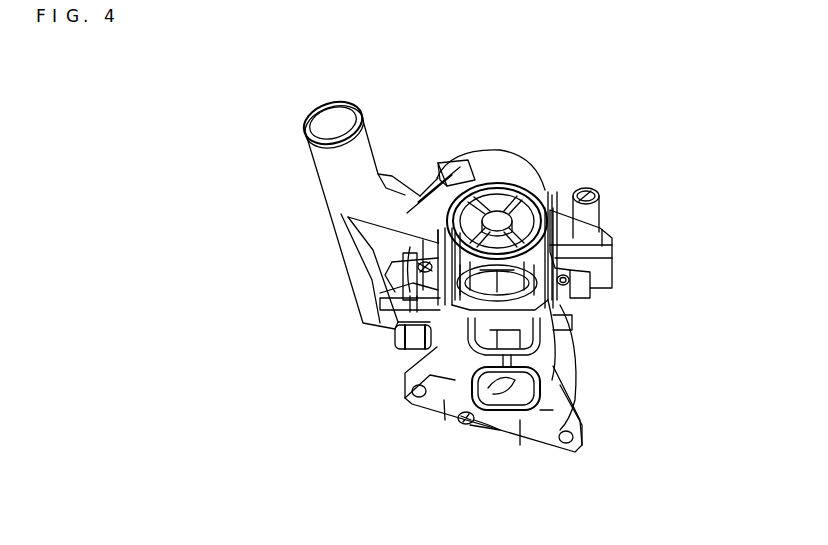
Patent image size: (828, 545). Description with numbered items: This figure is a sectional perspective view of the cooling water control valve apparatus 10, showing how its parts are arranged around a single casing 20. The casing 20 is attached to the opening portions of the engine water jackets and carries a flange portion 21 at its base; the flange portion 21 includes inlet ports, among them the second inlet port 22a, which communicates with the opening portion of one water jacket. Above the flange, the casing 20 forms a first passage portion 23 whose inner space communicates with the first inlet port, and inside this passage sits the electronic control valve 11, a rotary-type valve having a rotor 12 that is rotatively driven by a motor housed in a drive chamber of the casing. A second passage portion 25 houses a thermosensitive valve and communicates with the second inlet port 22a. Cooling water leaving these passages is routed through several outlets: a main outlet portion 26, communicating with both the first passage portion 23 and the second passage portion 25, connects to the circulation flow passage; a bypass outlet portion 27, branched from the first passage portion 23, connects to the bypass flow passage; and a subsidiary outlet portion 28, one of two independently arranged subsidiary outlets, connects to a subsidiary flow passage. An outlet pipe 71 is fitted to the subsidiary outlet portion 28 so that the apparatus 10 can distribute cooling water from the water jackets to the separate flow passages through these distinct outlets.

The cooling water control valve apparatus 10 is at (628, 224).
The electronic control valve 11 is at (522, 154).
The rotor 12 is at (566, 308).
The casing 20 is at (400, 253).
The flange portion 21 is at (443, 393).
The second inlet port 22a is at (530, 430).
The first passage portion 23 is at (541, 205).
The second passage portion 25 is at (487, 433).
The main outlet portion 26 is at (338, 177).
The bypass outlet portion 27 is at (400, 337).
The subsidiary outlet portion 28 is at (613, 270).
The outlet pipe 71 is at (588, 187).